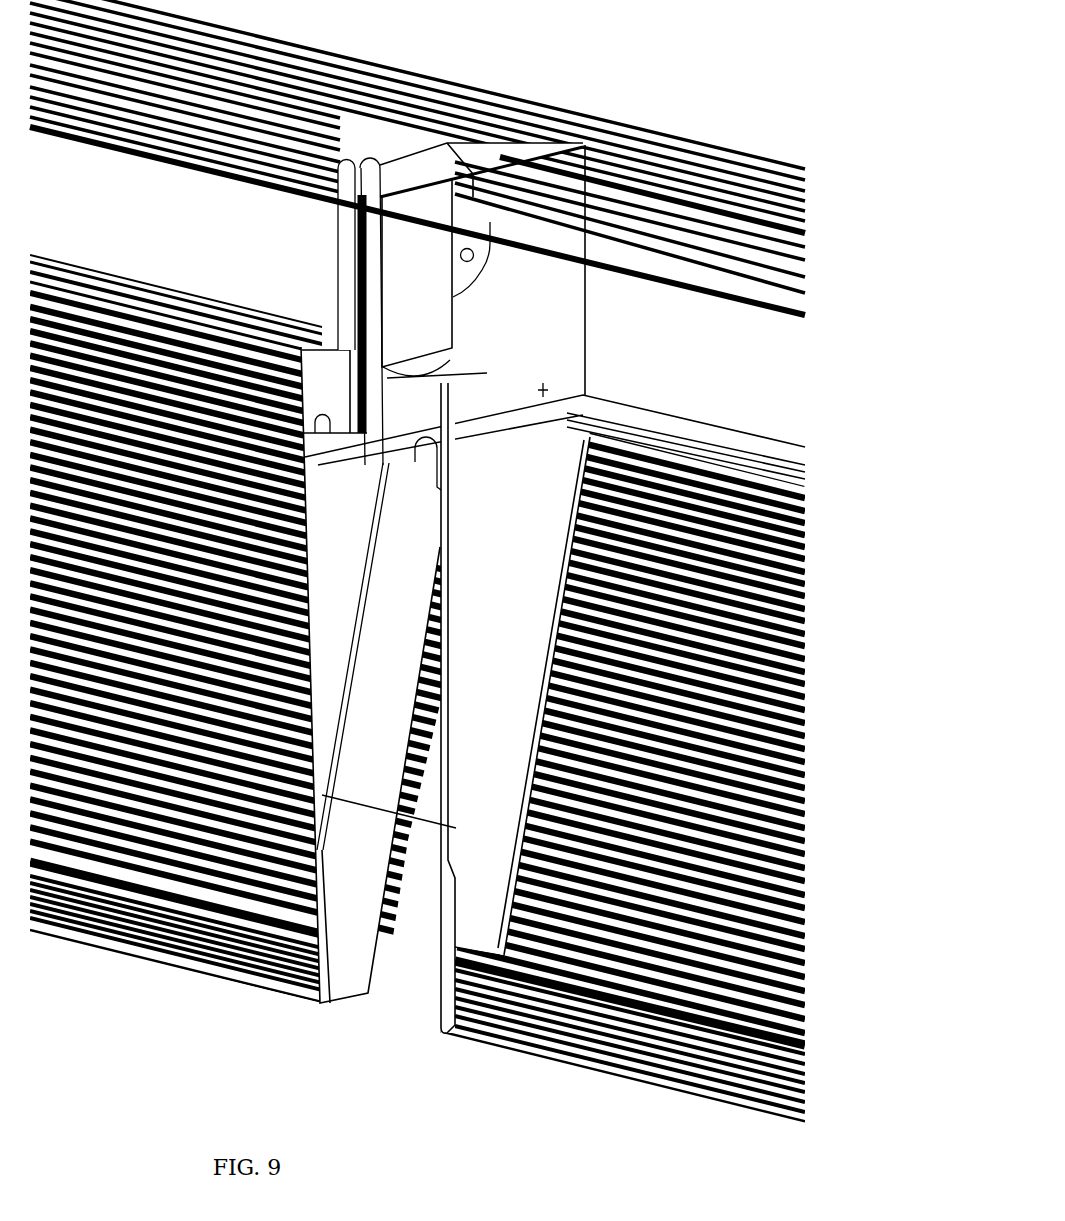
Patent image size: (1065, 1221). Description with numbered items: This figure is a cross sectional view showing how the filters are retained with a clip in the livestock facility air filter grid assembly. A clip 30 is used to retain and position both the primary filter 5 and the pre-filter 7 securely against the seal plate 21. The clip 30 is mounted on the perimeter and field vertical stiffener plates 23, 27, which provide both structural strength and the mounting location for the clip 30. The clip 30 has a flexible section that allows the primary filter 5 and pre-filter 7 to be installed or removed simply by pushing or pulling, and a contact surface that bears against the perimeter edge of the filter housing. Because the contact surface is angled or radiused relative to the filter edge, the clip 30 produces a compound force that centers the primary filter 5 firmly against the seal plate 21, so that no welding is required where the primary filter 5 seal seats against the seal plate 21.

The primary filter 5 is at (605, 170).
The pre-filter 7 is at (417, 659).
The seal plate 21 is at (498, 430).
The perimeter vertical stiffener plate 23 is at (662, 322).
The field vertical stiffener plate 27 is at (537, 322).
The clip 30 is at (410, 175).